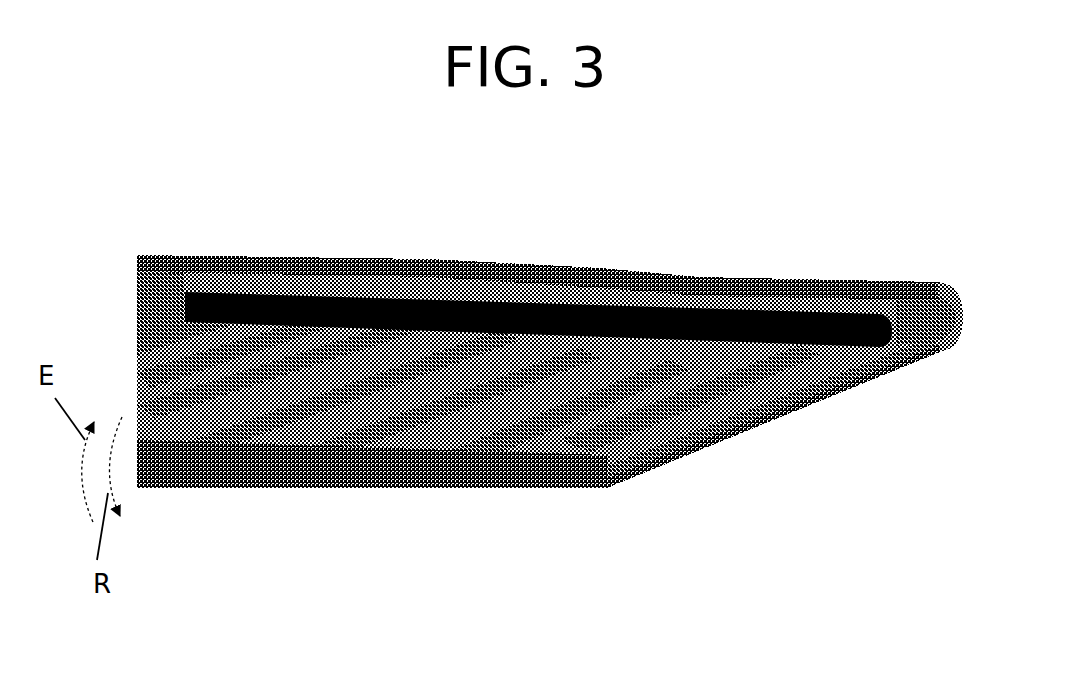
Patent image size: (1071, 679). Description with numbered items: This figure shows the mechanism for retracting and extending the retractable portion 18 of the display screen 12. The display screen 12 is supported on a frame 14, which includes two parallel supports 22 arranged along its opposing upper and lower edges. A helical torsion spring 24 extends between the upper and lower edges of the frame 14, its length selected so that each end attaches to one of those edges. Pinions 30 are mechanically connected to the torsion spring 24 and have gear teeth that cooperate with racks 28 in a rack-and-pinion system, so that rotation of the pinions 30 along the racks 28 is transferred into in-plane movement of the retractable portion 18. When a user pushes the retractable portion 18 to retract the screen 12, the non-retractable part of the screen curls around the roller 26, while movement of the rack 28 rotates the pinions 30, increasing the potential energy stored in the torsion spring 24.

The display screen 12 is at (477, 287).
The frame 14 is at (340, 180).
The retractable portion 18 is at (722, 278).
The support 22 is at (147, 278).
The helical torsion spring 24 is at (685, 312).
The roller 26 is at (337, 485).
The rack 28 is at (722, 383).
The pinion 30 is at (885, 345).